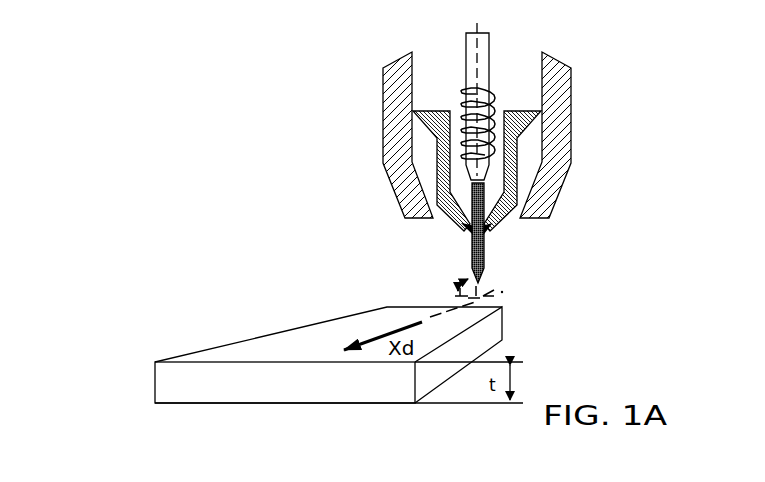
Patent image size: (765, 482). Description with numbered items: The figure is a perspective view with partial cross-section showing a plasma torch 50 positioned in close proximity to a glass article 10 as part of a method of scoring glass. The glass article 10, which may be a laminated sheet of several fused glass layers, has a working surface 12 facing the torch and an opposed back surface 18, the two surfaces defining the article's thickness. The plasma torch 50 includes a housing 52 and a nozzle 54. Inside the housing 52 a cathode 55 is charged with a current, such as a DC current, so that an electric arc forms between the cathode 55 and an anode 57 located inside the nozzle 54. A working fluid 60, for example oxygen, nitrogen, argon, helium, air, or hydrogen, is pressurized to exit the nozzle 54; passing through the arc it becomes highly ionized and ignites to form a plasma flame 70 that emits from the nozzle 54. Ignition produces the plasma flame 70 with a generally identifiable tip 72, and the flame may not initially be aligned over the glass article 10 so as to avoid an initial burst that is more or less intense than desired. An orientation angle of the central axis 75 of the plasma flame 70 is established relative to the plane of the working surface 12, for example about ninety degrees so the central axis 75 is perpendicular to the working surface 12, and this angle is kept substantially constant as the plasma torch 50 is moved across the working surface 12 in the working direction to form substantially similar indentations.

The glass article 10 is at (152, 382).
The working surface 12 is at (321, 338).
The back surface 18 is at (196, 411).
The plasma torch 50 is at (358, 160).
The housing 52 is at (573, 160).
The nozzle 54 is at (462, 229).
The cathode 55 is at (467, 45).
The anode 57 is at (463, 232).
The working fluid 60 is at (500, 80).
The plasma flame 70 is at (470, 252).
The tip 72 is at (484, 280).
The central axis 75 is at (486, 236).